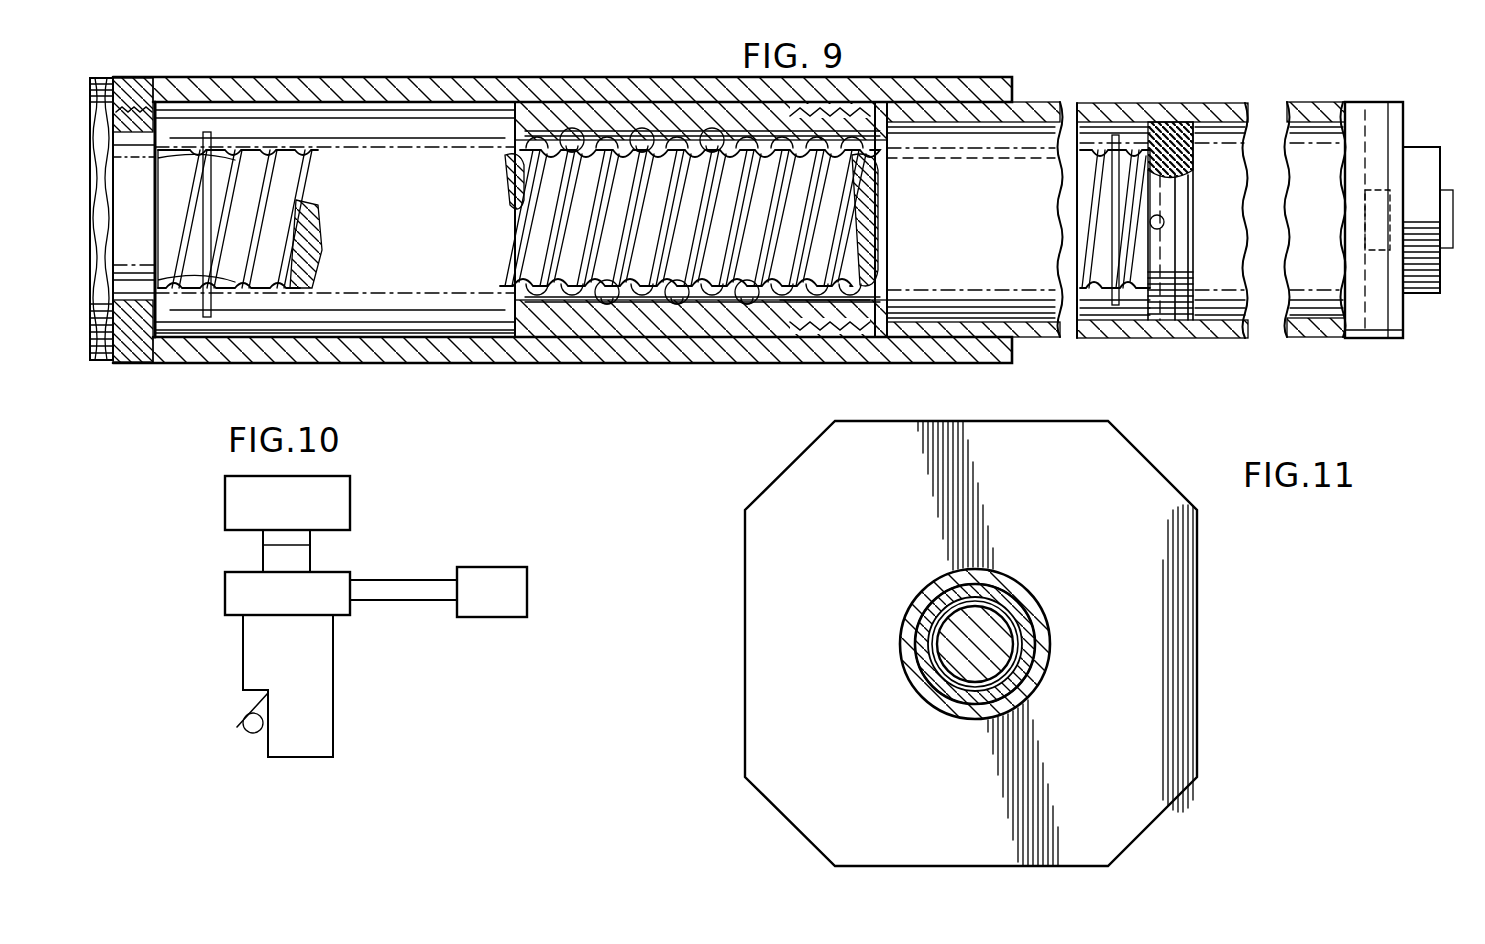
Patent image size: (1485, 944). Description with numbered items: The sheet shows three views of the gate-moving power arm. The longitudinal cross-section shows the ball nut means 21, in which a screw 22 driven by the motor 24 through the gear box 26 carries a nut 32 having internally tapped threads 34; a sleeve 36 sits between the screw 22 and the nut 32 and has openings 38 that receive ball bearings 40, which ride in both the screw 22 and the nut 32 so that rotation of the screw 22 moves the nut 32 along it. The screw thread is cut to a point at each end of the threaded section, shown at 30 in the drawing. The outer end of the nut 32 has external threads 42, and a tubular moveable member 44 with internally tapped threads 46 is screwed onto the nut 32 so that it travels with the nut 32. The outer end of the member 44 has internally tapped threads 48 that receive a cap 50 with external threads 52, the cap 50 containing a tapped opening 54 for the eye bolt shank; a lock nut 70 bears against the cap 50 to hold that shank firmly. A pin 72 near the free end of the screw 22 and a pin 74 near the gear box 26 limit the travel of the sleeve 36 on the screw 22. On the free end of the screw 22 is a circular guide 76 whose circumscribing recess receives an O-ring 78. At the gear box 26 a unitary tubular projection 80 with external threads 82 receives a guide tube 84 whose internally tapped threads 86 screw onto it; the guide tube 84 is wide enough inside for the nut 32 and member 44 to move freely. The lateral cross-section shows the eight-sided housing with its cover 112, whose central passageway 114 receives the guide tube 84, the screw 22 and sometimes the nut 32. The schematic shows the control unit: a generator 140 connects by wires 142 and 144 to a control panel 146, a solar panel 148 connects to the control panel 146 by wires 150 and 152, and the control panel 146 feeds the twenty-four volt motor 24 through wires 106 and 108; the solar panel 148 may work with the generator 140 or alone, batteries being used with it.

In FIG. 9, the ball nut means 21 is at (507, 133).
In FIG. 9, the screw 22 is at (311, 194).
In FIG. 11, the screw 22 is at (943, 662).
In FIG. 10, the motor 24 is at (492, 592).
In FIG. 9, the gear box 26 is at (123, 267).
In FIG. 9, the screw thread end 30 is at (300, 210).
In FIG. 9, the nut 32 is at (592, 302).
In FIG. 11, the nut 32 is at (1000, 605).
In FIG. 9, the internally tapped threads 34 is at (525, 337).
In FIG. 9, the sleeve 36 is at (713, 300).
In FIG. 9, the openings 38 is at (692, 77).
In FIG. 9, the ball bearings 40 is at (628, 100).
In FIG. 9, the external threads 42 is at (790, 300).
In FIG. 9, the tubular moveable member 44 is at (1062, 100).
In FIG. 9, the internally tapped threads 46 is at (815, 337).
In FIG. 9, the internally tapped threads 48 is at (1382, 100).
In FIG. 9, the cap 50 is at (1400, 340).
In FIG. 9, the external threads 52 is at (1352, 100).
In FIG. 9, the tapped opening 54 is at (1408, 300).
In FIG. 9, the lock nut 70 is at (1420, 162).
In FIG. 9, the pin 72 is at (1115, 308).
In FIG. 9, the pin 74 is at (207, 132).
In FIG. 9, the circular guide 76 is at (1182, 338).
In FIG. 9, the O-ring 78 is at (1172, 124).
In FIG. 9, the unitary tubular projection 80 is at (88, 360).
In FIG. 9, the external threads 82 is at (82, 125).
In FIG. 9, the guide tube 84 is at (478, 352).
In FIG. 11, the guide tube 84 is at (913, 615).
In FIG. 9, the internally tapped threads 86 is at (128, 103).
In FIG. 10, the wire 106 is at (436, 552).
In FIG. 10, the wire 108 is at (388, 600).
In FIG. 11, the cover 112 is at (1105, 497).
In FIG. 11, the central passageway 114 is at (1045, 673).
In FIG. 10, the generator 140 is at (246, 732).
In FIG. 10, the wire 142 is at (243, 665).
In FIG. 10, the wire 144 is at (333, 695).
In FIG. 10, the control panel 146 is at (287, 593).
In FIG. 10, the solar panel 148 is at (287, 503).
In FIG. 10, the wire 150 is at (262, 546).
In FIG. 10, the wire 152 is at (313, 550).